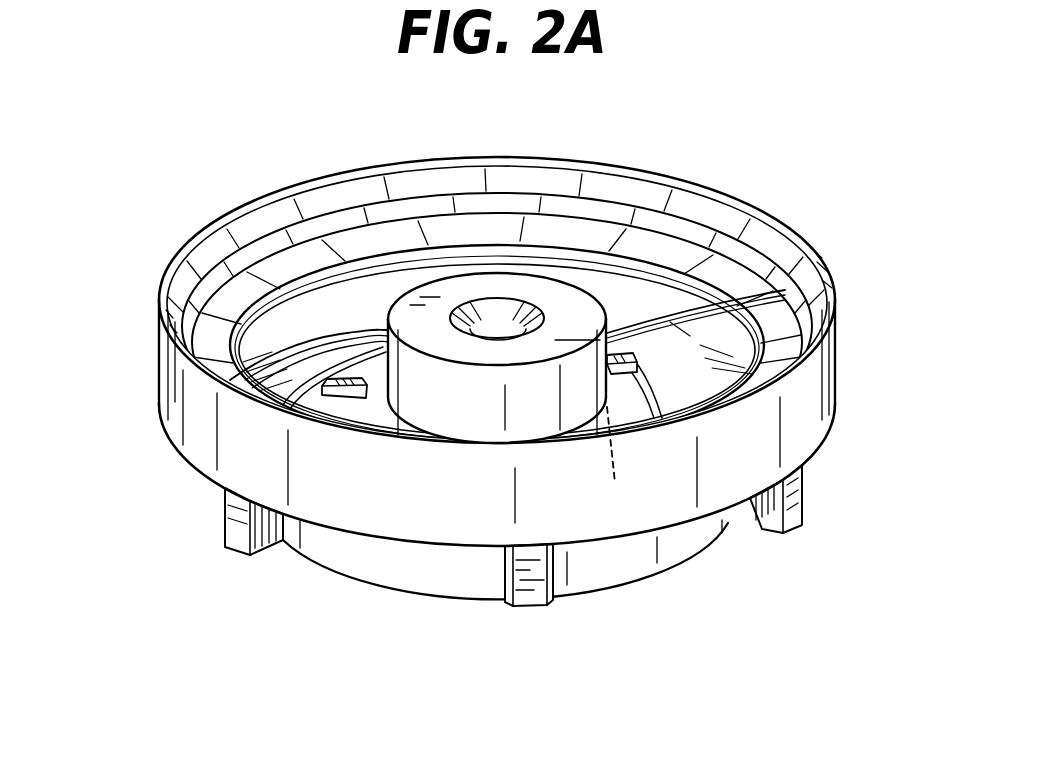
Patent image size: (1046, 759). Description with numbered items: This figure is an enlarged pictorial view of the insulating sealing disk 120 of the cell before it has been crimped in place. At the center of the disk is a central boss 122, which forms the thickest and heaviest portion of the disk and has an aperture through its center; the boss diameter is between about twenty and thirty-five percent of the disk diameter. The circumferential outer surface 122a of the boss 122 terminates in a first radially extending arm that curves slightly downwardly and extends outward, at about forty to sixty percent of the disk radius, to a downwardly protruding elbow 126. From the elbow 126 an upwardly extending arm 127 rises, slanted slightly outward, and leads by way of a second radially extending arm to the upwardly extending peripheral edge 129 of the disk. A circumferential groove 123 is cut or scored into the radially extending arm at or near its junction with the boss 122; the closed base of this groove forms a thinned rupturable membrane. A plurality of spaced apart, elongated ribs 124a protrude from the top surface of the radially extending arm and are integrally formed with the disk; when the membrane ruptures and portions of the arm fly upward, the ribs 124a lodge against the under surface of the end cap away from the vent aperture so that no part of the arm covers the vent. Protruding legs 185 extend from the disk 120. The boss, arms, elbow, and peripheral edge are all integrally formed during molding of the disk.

The insulating sealing disk 120 is at (544, 317).
The central boss 122 is at (555, 293).
The circumferential outer surface of boss 122a is at (390, 345).
The circumferential groove 123 is at (617, 462).
The ribs 124a is at (334, 383).
The protruding elbow 126 is at (617, 583).
The upwardly extending arm 127 is at (675, 542).
The peripheral edge 129 is at (772, 228).
The protruding legs 185 is at (232, 537).